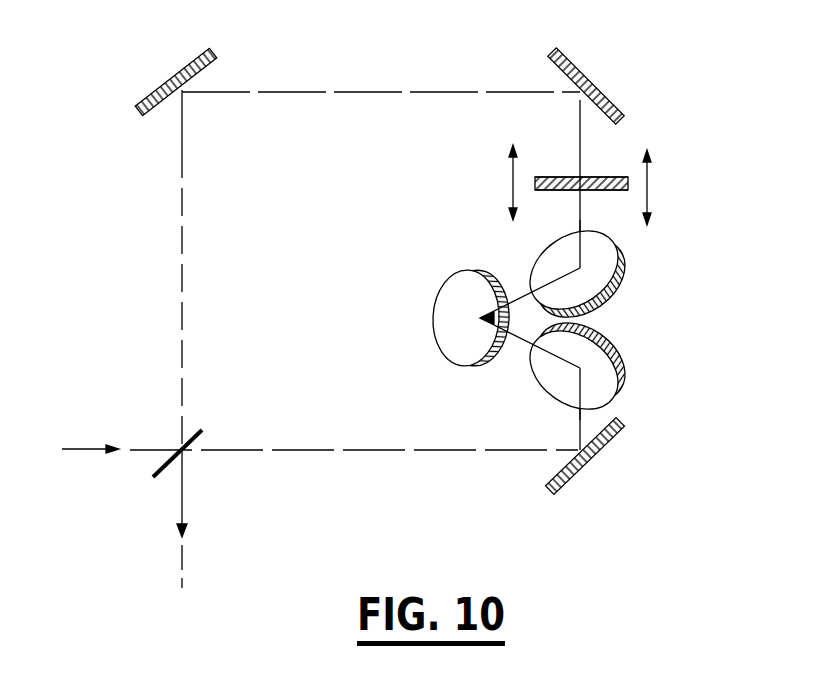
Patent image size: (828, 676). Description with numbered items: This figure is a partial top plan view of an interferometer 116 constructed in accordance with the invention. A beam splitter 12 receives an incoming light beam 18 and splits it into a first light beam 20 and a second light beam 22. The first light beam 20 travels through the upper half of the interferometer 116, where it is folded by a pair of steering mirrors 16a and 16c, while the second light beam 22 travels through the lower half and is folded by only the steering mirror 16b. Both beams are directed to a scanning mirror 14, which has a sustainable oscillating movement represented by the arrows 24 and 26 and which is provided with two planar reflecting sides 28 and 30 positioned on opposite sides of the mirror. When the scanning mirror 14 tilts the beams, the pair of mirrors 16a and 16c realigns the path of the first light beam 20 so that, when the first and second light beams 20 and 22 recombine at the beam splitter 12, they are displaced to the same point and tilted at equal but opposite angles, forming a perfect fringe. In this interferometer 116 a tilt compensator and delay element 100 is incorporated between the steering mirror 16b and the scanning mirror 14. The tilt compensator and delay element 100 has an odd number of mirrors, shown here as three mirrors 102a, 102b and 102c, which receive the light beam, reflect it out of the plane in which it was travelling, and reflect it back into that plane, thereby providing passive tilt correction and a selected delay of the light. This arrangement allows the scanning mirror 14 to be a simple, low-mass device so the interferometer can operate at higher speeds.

The beam splitter 12 is at (203, 435).
The scanning mirror 14 is at (612, 177).
The steering mirror 16a is at (166, 82).
The steering mirror 16b is at (573, 480).
The steering mirror 16c is at (587, 66).
The light beam 18 is at (72, 450).
The first light beam 20 is at (183, 136).
The second light beam 22 is at (332, 452).
The arrow 24 is at (650, 186).
The arrow 26 is at (512, 178).
The reflecting side 28 is at (552, 176).
The reflecting side 30 is at (557, 191).
The tilt compensator and delay element 100 is at (656, 315).
The mirror 102a is at (623, 393).
The mirror 102b is at (436, 334).
The mirror 102c is at (627, 263).
The interferometer 116 is at (416, 65).